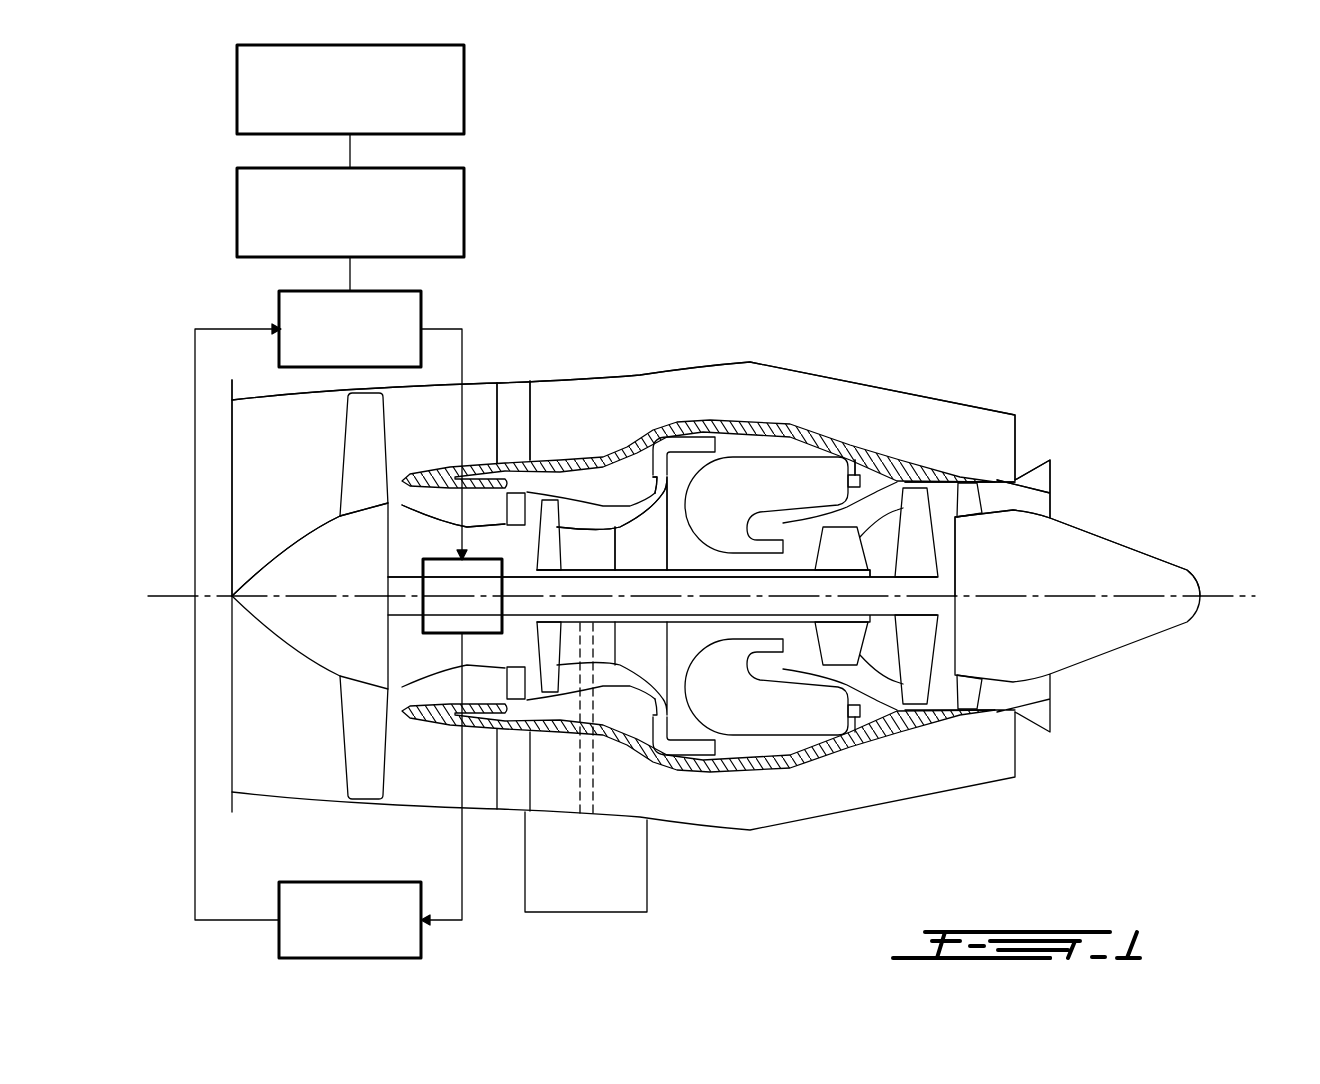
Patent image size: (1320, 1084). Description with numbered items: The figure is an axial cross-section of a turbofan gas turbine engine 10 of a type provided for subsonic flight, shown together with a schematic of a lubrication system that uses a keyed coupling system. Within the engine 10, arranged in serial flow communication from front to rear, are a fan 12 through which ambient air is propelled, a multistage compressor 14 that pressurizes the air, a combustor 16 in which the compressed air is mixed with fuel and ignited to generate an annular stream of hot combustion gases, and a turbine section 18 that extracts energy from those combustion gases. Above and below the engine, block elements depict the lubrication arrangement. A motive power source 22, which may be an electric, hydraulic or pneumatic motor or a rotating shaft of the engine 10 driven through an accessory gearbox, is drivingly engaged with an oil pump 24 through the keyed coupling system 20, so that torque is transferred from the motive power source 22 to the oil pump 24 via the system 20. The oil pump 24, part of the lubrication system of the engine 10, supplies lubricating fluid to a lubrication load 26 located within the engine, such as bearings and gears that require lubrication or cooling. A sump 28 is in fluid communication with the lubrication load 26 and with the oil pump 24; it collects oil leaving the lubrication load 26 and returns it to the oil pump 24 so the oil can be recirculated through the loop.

The gas turbine engine 10 is at (897, 320).
The fan 12 is at (360, 727).
The multistage compressor 14 is at (602, 490).
The combustor 16 is at (768, 475).
The turbine section 18 is at (880, 652).
The keyed coupling system 20 is at (237, 212).
The motive power source 22 is at (237, 88).
The oil pump 24 is at (279, 327).
The lubrication load 26 is at (447, 612).
The sump 28 is at (352, 882).